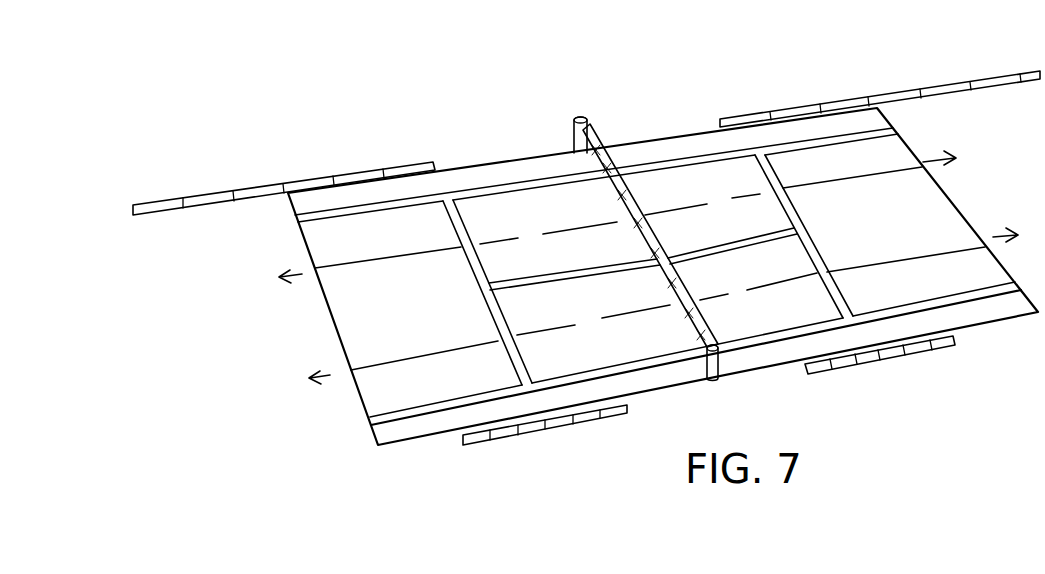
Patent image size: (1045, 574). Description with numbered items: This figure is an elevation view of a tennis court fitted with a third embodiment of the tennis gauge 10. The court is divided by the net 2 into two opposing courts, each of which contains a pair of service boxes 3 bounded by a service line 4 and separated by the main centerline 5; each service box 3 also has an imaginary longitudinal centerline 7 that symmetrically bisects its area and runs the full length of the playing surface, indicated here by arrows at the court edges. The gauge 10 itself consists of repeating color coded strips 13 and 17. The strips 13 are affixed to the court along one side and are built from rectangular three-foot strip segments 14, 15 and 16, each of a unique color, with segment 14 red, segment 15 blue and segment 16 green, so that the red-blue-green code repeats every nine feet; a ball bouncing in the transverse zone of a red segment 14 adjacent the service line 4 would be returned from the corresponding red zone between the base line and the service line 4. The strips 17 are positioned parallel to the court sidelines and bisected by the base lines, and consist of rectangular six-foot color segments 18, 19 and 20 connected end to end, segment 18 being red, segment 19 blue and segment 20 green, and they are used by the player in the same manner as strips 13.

The net 2 is at (592, 142).
The service boxes 3 is at (538, 225).
The service line 4 is at (478, 280).
The main centerline 5 is at (590, 269).
The imaginary longitudinal centerline 7 is at (300, 273).
The tennis gauge 10 is at (444, 157).
The repeating color coded strips 13 is at (462, 445).
The strip segment 14 is at (485, 440).
The strip segment 15 is at (509, 433).
The strip segment 16 is at (533, 432).
The repeating color coded strips 17 is at (134, 216).
The color segment 18 is at (167, 203).
The color segment 19 is at (208, 195).
The color segment 20 is at (253, 192).